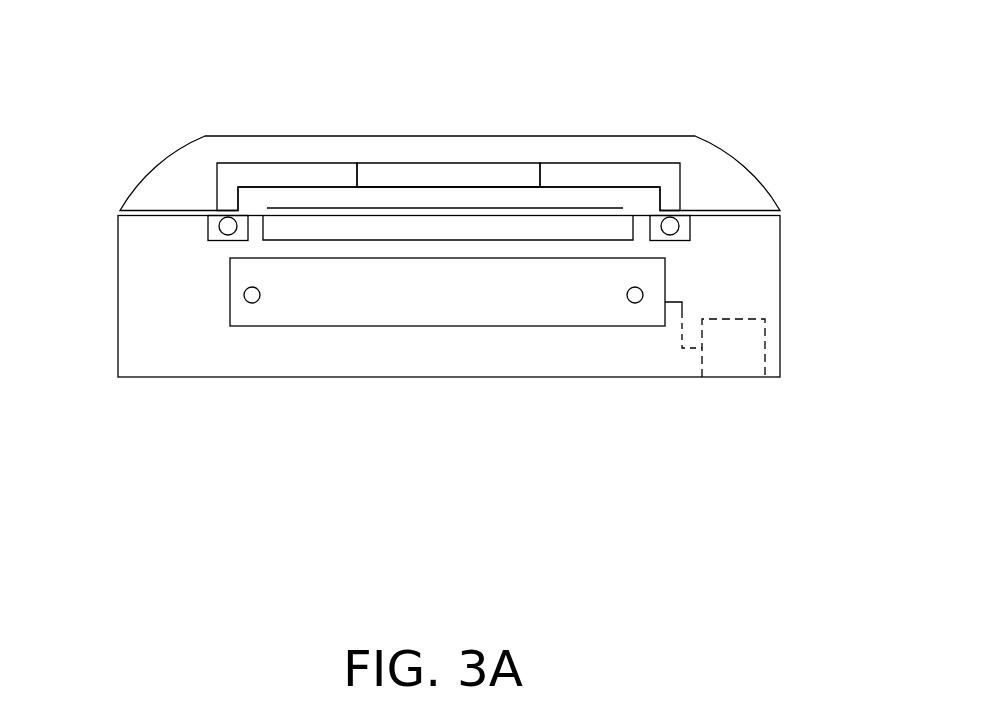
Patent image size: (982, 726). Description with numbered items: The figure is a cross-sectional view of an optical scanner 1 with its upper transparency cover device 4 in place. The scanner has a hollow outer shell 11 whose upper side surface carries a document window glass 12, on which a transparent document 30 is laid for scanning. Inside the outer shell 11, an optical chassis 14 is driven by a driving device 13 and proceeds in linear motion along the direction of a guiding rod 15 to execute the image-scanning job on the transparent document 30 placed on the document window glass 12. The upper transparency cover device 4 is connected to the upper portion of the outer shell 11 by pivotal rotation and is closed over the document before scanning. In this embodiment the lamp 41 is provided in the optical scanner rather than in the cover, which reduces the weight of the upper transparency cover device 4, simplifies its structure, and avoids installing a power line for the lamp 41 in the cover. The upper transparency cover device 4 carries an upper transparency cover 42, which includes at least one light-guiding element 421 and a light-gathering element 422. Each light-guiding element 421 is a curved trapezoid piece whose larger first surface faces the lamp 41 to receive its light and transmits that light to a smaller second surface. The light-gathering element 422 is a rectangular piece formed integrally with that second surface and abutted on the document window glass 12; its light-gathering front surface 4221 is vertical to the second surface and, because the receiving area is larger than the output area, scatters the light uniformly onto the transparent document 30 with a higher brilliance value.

The optical scanner 1 is at (165, 395).
The upper transparency cover device 4 is at (710, 110).
The outer shell 11 is at (780, 297).
The document window glass 12 is at (377, 232).
The driving device 13 is at (765, 363).
The optical chassis 14 is at (515, 310).
The guiding rod 15 is at (243, 295).
The transparent document 30 is at (605, 207).
The lamp 41 is at (226, 224).
The upper transparency cover 42 is at (295, 76).
The light-guiding element 421 is at (302, 175).
The light-gathering element 422 is at (440, 176).
The light-gathering front surface 4221 is at (470, 188).